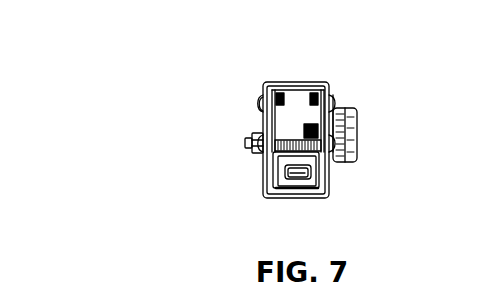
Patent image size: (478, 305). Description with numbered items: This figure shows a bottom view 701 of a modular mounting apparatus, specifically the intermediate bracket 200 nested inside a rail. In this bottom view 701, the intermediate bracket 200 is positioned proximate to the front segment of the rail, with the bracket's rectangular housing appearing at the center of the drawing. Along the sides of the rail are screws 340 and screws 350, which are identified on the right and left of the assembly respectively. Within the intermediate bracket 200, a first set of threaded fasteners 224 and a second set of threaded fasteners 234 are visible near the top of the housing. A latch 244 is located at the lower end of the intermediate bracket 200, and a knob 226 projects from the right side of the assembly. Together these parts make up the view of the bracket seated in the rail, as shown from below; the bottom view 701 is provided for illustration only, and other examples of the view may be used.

The bottom view 701 is at (88, 190).
The intermediate bracket 200 is at (303, 92).
The second set of threaded fasteners 234 is at (277, 92).
The first set of threaded fasteners 224 is at (313, 82).
The screws 340 is at (334, 102).
The knob 226 is at (358, 140).
The screws 350 is at (262, 110).
The latch 244 is at (302, 188).